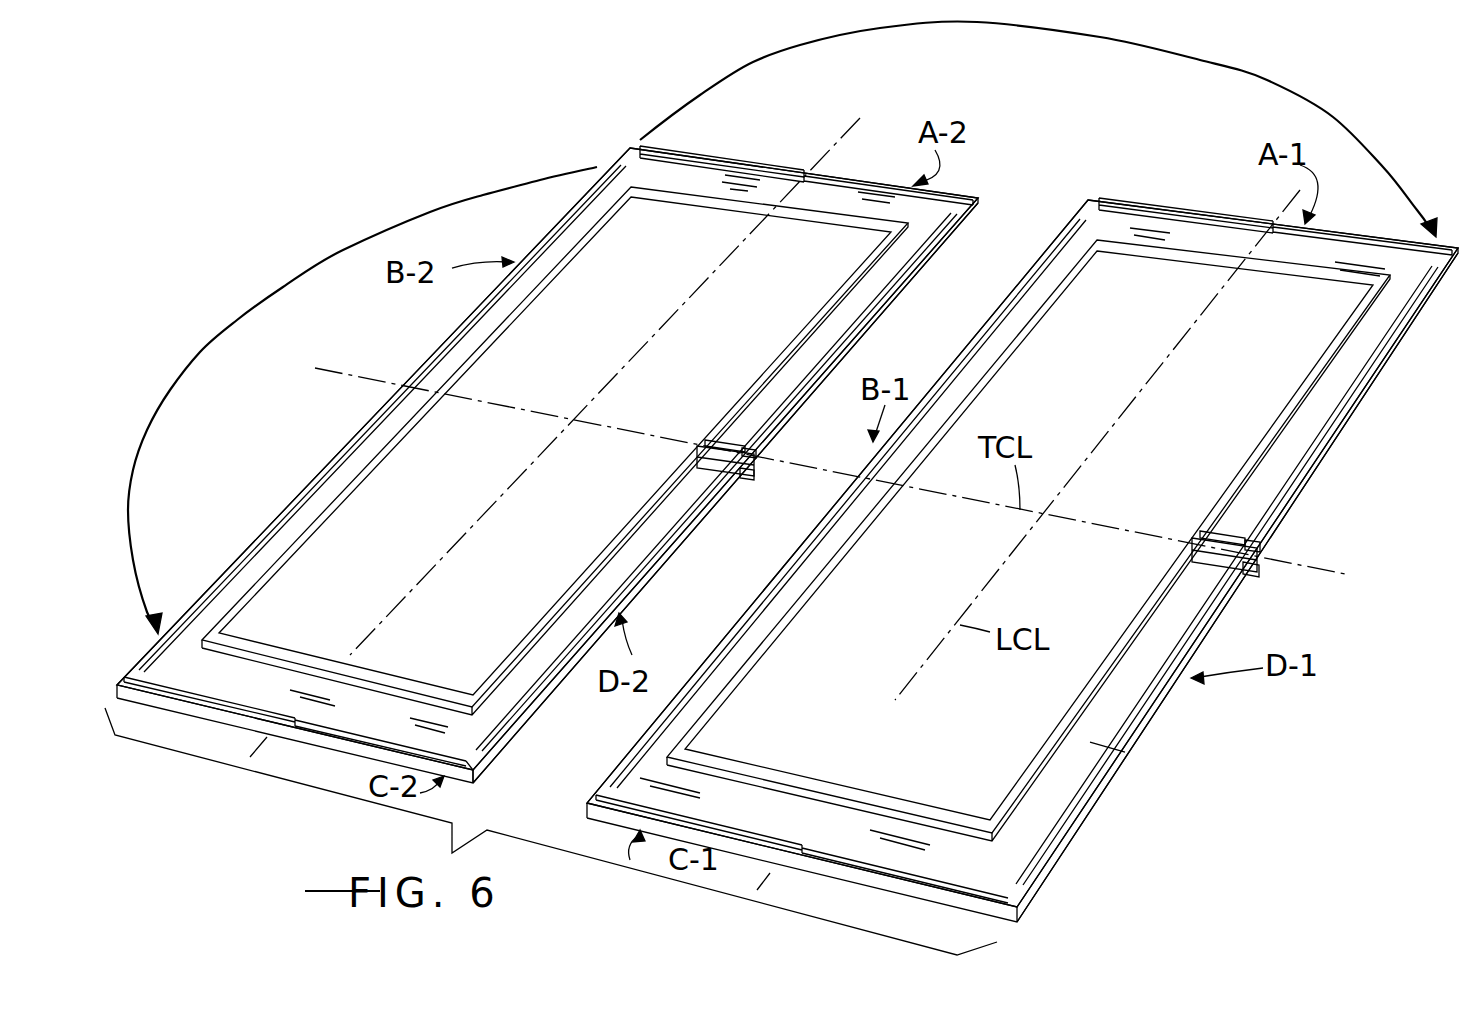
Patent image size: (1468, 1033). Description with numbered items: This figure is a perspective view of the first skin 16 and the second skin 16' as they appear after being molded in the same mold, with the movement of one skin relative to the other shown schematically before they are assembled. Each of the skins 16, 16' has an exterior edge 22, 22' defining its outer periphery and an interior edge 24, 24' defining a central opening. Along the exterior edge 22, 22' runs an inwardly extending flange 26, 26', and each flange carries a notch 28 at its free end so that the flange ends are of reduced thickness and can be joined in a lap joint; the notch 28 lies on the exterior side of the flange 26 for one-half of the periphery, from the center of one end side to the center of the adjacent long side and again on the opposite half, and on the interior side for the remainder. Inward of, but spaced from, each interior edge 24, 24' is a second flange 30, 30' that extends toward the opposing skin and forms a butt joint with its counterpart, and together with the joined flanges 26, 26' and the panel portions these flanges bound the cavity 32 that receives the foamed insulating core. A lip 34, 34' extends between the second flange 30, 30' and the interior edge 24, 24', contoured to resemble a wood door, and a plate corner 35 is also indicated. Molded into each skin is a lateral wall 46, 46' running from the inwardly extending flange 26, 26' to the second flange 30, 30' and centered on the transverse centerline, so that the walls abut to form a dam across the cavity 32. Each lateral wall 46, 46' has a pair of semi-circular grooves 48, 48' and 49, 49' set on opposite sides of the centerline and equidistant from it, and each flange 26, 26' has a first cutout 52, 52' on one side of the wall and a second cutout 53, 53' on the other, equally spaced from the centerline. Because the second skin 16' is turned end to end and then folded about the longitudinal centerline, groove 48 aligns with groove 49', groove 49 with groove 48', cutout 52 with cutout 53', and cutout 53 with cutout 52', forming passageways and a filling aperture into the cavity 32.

The first skin 16 is at (1022, 553).
The second skin 16' is at (547, 431).
The exterior edge 22 is at (1022, 561).
The exterior edge 22' is at (547, 467).
The interior edge 24 is at (1028, 536).
The interior edge 24' is at (555, 447).
The inwardly extending flange 26 is at (1024, 536).
The inwardly extending flange 26' is at (548, 456).
The notch 28 is at (1113, 200).
The second flange 30 is at (1029, 525).
The second flange 30' is at (554, 448).
The cavity 32 is at (653, 567).
The lip 34 is at (1028, 545).
The lip 34' is at (555, 469).
The plate corner 35 is at (495, 684).
The lateral wall 46 is at (1211, 503).
The lateral wall 46' is at (713, 406).
The semi-circular groove 48 is at (1169, 572).
The semi-circular groove 48' is at (661, 469).
The semi-circular groove 49 is at (1181, 510).
The semi-circular groove 49' is at (683, 417).
The first cutout 52 is at (1290, 582).
The first cutout 52' is at (774, 501).
The second cutout 53 is at (1305, 533).
The second cutout 53' is at (795, 437).